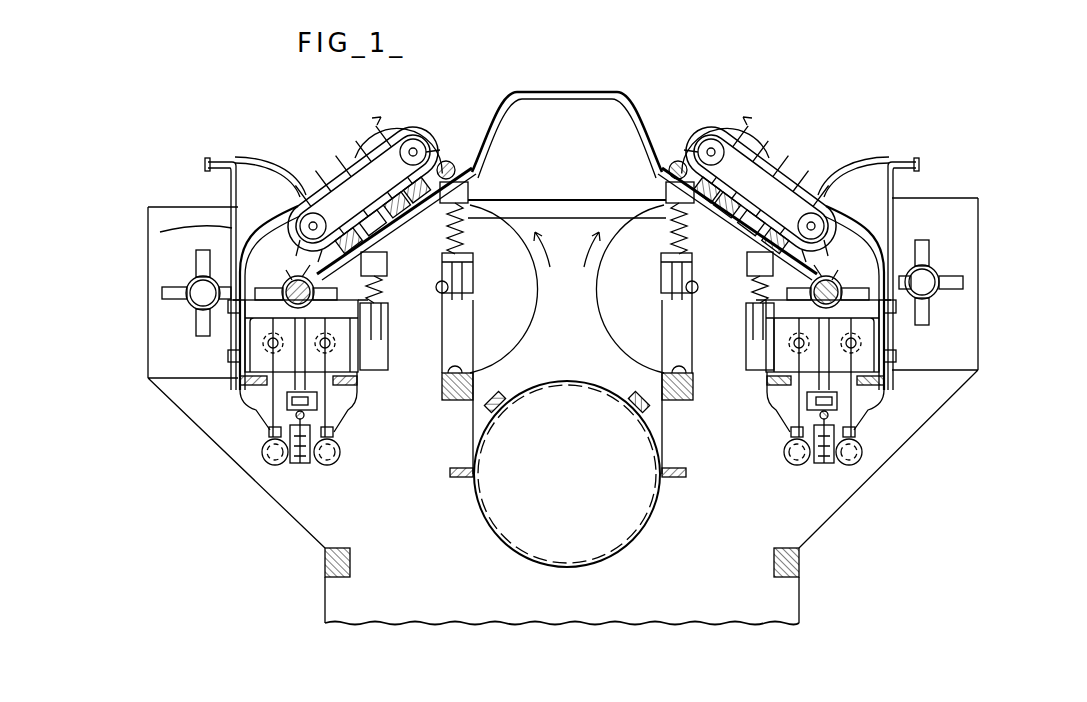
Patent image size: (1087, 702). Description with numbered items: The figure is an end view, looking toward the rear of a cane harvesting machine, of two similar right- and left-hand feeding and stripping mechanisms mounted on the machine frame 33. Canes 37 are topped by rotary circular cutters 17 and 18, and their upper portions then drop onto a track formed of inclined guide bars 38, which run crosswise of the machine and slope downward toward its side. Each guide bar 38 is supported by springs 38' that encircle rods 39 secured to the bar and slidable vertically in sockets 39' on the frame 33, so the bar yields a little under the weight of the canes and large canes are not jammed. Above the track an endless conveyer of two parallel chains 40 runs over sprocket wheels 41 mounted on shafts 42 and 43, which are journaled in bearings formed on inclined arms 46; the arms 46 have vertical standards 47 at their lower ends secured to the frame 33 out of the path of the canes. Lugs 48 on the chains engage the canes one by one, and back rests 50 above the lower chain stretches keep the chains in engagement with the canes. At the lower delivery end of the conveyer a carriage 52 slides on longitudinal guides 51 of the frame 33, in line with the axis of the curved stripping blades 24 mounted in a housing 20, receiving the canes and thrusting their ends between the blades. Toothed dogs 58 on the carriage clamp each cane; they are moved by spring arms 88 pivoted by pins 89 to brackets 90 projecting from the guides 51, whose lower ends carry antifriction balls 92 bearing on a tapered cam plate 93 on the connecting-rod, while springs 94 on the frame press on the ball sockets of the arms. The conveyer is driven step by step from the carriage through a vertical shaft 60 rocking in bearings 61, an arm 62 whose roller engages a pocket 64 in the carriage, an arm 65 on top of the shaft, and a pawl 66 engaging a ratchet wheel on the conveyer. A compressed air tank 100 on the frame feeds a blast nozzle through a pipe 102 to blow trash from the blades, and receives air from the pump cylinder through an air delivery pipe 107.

The rotary circular cutter 17 is at (758, 133).
The rotary circular cutter 18 is at (612, 316).
The housing 20 is at (957, 245).
The stripping blade 24 is at (937, 295).
The machine frame 33 is at (558, 600).
The cane 37 is at (465, 163).
The guide bar 38 is at (567, 224).
The spring 38' is at (567, 253).
The rod 39 is at (567, 308).
The socket 39' is at (567, 302).
The endless chain 40 is at (797, 193).
The sprocket wheel 41 is at (822, 212).
The shaft 42 is at (707, 147).
The shaft 43 is at (830, 222).
The arm 46 is at (835, 220).
The vertical standard 47 is at (898, 332).
The lug 48 is at (740, 113).
The back rest 50 is at (750, 192).
The longitudinal guide 51 is at (228, 322).
The carriage 52 is at (884, 380).
The toothed dog 58 is at (845, 283).
The vertical shaft 60 is at (238, 250).
The bearing 61 is at (250, 362).
The arm 62 is at (256, 412).
The pocket 64 is at (836, 402).
The arm 65 is at (207, 166).
The pawl 66 is at (858, 155).
The spring arm 88 is at (786, 443).
The pin 89 is at (327, 345).
The bracket 90 is at (799, 345).
The antifriction ball 92 is at (786, 470).
The cam plate 93 is at (823, 464).
The spring 94 is at (786, 427).
The compressed air tank 100 is at (512, 510).
The pipe 102 is at (630, 405).
The air delivery pipe 107 is at (668, 478).